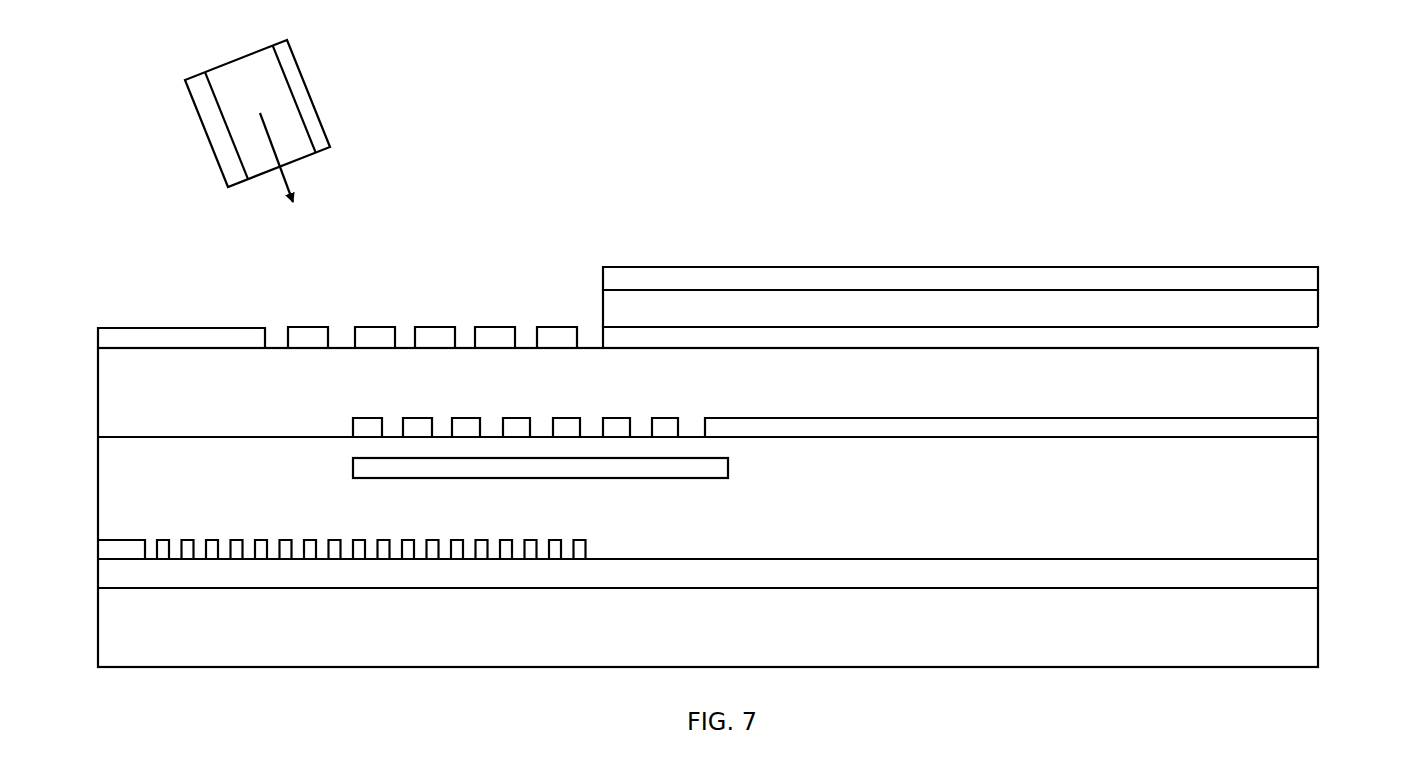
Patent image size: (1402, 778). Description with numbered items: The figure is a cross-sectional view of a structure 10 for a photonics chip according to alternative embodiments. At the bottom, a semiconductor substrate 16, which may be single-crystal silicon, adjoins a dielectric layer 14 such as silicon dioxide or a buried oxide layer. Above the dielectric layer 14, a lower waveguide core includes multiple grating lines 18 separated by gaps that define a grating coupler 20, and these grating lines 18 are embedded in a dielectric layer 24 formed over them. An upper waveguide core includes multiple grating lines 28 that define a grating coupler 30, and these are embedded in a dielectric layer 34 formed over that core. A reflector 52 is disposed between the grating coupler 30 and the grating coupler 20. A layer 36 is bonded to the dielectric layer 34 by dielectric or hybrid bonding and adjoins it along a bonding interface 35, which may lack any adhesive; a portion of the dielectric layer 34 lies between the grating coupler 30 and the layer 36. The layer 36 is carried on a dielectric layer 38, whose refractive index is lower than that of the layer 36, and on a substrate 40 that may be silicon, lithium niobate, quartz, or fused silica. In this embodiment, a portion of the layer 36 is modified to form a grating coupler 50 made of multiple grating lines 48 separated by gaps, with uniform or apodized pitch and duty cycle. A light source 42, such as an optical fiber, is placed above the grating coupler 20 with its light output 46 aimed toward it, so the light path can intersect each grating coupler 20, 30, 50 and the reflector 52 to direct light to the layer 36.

The structure 10 is at (160, 245).
The dielectric layer 14 is at (1212, 579).
The semiconductor substrate 16 is at (1215, 621).
The grating lines 18 is at (580, 548).
The grating coupler 20 is at (420, 524).
The dielectric layer 24 is at (1212, 527).
The grating lines 28 is at (368, 430).
The grating coupler 30 is at (770, 400).
The dielectric layer 34 is at (1212, 386).
The bonding interface 35 is at (857, 349).
The layer 36 is at (1215, 342).
The dielectric layer 38 is at (1215, 310).
The substrate 40 is at (1212, 280).
The light source 42 is at (308, 110).
The light output 46 is at (262, 132).
The grating lines 48 is at (493, 342).
The grating coupler 50 is at (337, 278).
The reflector 52 is at (700, 468).